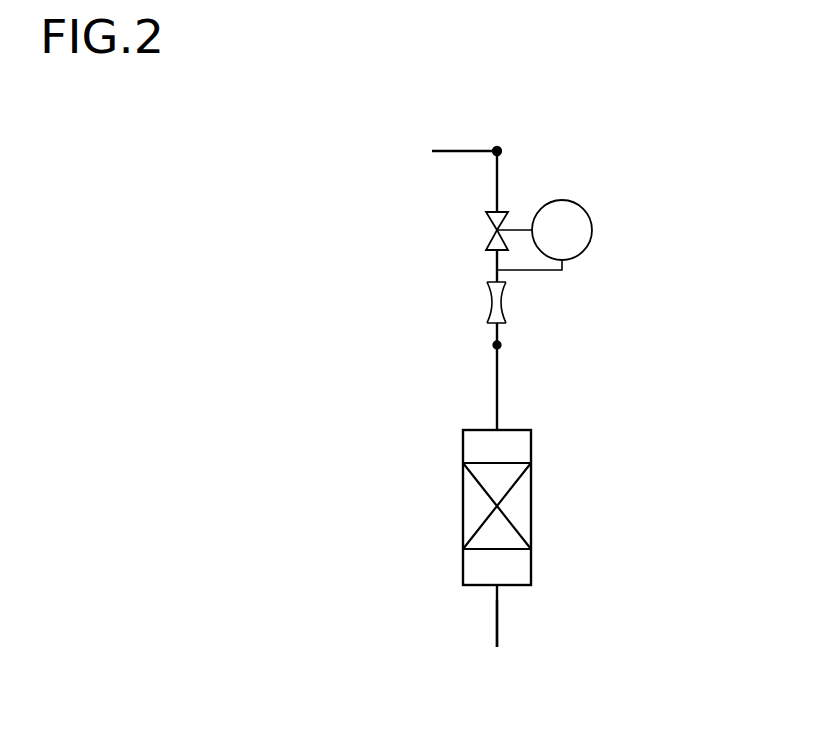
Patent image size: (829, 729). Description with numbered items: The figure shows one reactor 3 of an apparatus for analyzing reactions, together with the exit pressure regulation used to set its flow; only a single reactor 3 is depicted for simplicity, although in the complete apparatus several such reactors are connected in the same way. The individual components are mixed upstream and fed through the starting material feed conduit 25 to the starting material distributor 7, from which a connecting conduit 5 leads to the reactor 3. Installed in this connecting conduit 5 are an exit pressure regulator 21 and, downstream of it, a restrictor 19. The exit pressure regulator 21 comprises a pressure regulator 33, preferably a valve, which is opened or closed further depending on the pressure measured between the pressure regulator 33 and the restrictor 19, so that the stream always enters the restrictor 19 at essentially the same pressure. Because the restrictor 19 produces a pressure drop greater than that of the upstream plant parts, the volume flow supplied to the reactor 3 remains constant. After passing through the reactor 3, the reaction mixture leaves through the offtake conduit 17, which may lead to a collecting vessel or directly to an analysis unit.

The reactor 3 is at (531, 497).
The connecting conduit 5 is at (500, 185).
The starting material distributor 7 is at (502, 147).
The offtake conduit 17 is at (500, 620).
The restrictor 19 is at (497, 302).
The exit pressure regulator 21 is at (468, 240).
The starting material feed conduit 25 is at (453, 149).
The pressure regulator 33 is at (505, 212).